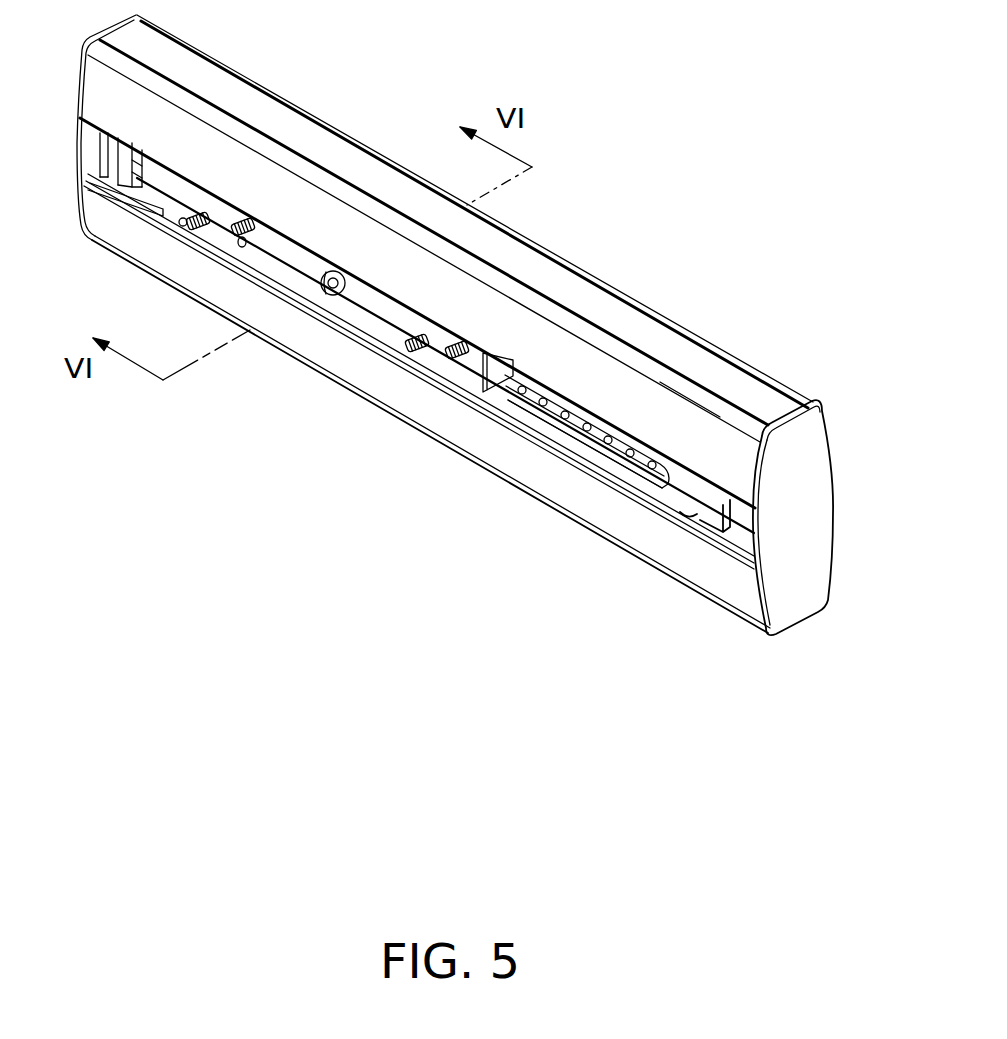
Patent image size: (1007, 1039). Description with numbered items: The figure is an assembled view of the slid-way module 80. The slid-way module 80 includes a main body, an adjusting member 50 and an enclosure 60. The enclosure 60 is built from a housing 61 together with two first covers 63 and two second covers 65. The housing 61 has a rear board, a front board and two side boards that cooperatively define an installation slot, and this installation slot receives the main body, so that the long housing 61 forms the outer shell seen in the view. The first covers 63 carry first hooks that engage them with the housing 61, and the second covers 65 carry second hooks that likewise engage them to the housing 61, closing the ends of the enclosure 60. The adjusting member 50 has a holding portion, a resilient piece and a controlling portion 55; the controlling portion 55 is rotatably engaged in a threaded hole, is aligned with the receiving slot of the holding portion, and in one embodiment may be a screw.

The slid-way module 80 is at (556, 198).
The enclosure 60 is at (756, 436).
The housing 61 is at (693, 427).
The second cover 65 is at (765, 410).
The first cover 63 is at (800, 437).
The controlling portion 55 is at (330, 296).
The adjusting member 50 is at (605, 455).